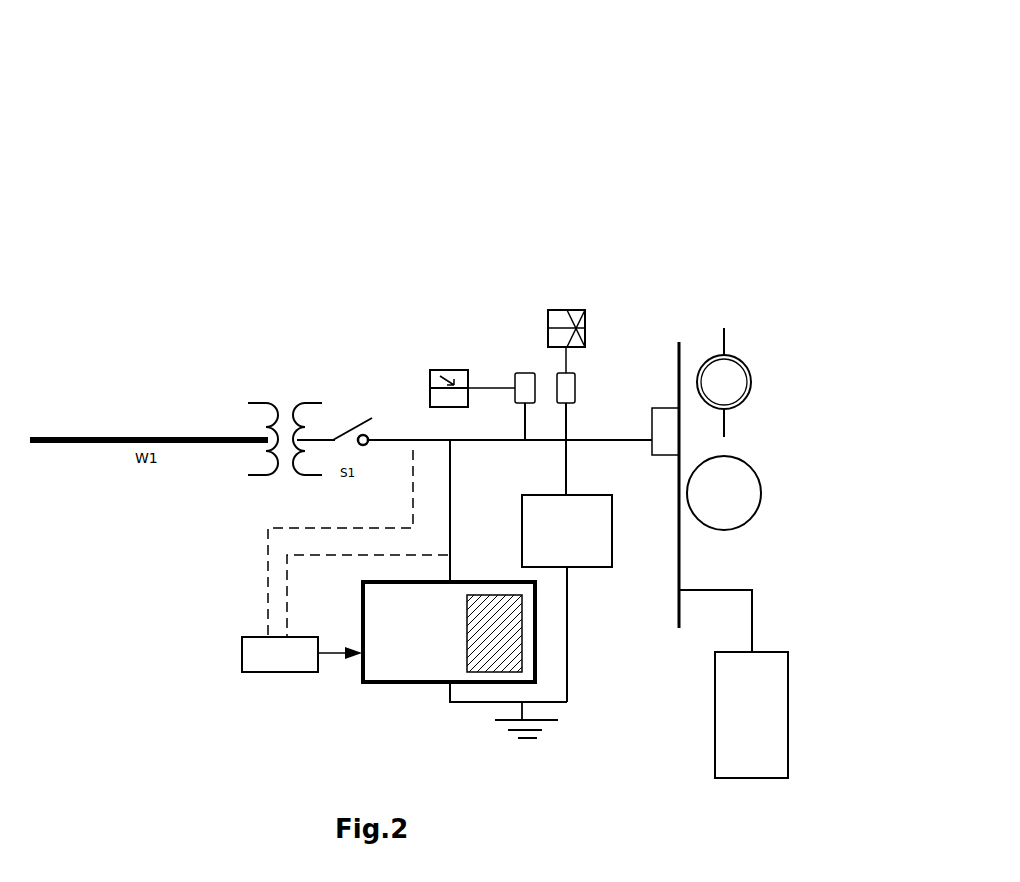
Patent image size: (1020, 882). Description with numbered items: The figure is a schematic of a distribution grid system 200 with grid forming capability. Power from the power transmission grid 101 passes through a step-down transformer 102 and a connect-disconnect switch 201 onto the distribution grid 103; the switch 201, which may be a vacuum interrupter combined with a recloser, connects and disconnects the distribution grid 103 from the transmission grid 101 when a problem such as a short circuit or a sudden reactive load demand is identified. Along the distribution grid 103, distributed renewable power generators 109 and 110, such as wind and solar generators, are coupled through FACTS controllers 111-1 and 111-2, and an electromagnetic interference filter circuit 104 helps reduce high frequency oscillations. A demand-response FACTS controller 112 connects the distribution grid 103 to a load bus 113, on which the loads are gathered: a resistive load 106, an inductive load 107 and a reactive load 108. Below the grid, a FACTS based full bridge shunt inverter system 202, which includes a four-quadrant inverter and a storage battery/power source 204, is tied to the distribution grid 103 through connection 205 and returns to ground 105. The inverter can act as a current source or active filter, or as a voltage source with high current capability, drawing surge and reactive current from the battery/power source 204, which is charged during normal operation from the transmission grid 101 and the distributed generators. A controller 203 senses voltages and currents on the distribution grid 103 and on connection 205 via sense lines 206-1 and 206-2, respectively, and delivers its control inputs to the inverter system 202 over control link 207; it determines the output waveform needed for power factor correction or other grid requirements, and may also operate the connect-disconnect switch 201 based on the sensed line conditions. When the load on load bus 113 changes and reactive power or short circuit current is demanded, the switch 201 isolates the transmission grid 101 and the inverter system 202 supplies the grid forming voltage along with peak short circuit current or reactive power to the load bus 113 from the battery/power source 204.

The distribution grid system 200 is at (435, 107).
The power transmission grid 101 is at (87, 443).
The step-down transformer 102 is at (283, 476).
The distribution grid 103 is at (385, 437).
The connect-disconnect switch 201 is at (357, 423).
The connection 205 is at (450, 480).
The distributed renewable power generator 109 is at (445, 370).
The FACTS controller 111-1 is at (515, 400).
The distributed renewable power generator 110 is at (563, 308).
The FACTS controller 111-2 is at (575, 388).
The electromagnetic interference filter circuit 104 is at (612, 555).
The ground 105 is at (535, 737).
The demand-response FACTS controller 112 is at (653, 455).
The load bus 113 is at (679, 627).
The resistive load 106 is at (788, 712).
The inductive load 107 is at (762, 505).
The reactive load 108 is at (751, 382).
The full bridge shunt inverter system 202 is at (397, 682).
The storage battery/power source 204 is at (485, 595).
The controller 203 is at (270, 672).
The signal line 207 is at (342, 653).
The sense line 206-1 is at (413, 483).
The sense line 206-2 is at (287, 600).